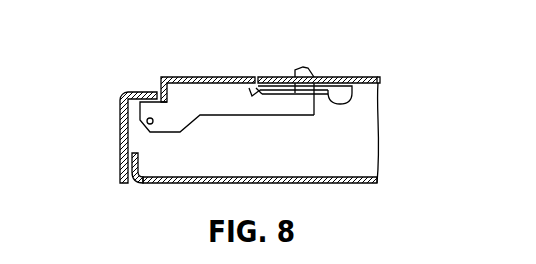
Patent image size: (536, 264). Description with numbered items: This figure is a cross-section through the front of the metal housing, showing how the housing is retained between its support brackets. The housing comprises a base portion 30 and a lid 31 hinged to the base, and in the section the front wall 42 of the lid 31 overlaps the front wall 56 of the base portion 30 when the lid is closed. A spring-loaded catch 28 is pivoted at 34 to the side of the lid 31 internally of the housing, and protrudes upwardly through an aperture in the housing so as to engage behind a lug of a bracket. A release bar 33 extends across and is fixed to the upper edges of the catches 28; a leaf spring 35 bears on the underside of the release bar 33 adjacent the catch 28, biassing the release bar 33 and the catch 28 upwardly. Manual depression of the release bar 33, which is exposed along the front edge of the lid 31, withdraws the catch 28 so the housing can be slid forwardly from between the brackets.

The spring-loaded catch 28 is at (306, 67).
The base portion 30 is at (335, 184).
The lid 31 is at (363, 75).
The release bar 33 is at (212, 76).
The pivot 34 is at (147, 121).
The leaf spring 35 is at (302, 95).
The front wall of the lid 42 is at (121, 163).
The front wall of the base portion 56 is at (140, 172).